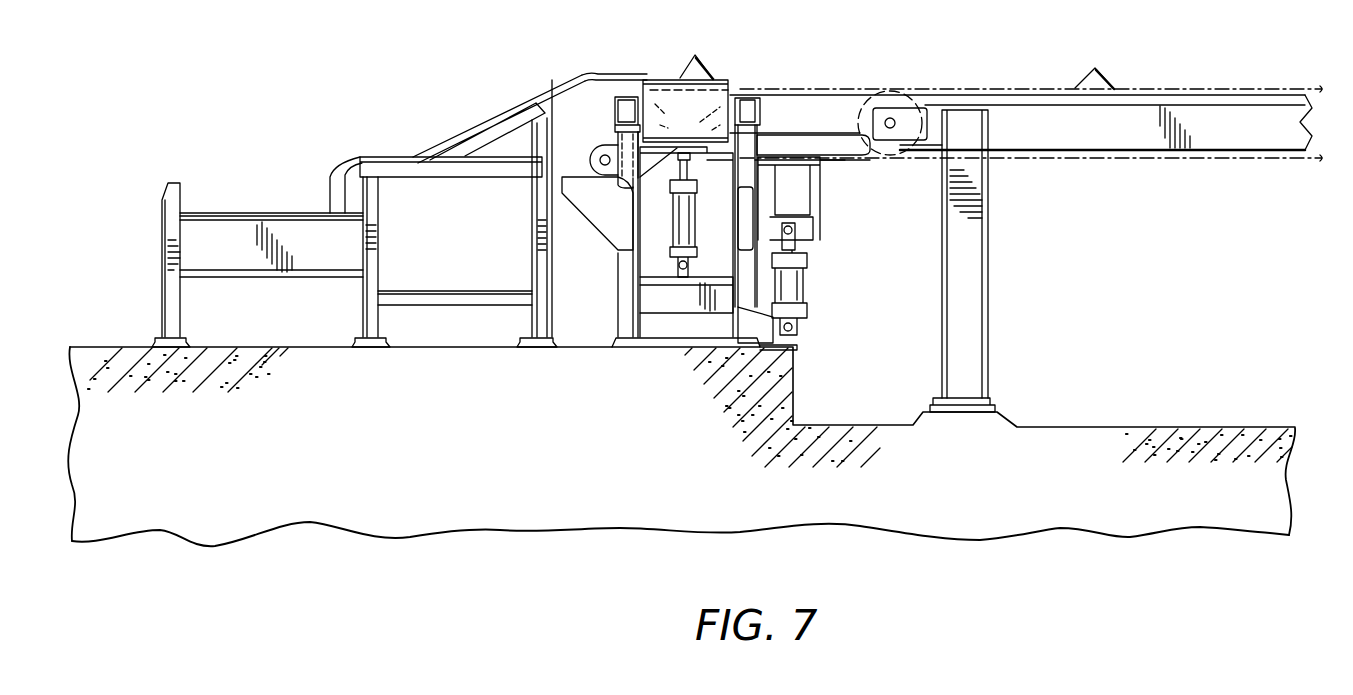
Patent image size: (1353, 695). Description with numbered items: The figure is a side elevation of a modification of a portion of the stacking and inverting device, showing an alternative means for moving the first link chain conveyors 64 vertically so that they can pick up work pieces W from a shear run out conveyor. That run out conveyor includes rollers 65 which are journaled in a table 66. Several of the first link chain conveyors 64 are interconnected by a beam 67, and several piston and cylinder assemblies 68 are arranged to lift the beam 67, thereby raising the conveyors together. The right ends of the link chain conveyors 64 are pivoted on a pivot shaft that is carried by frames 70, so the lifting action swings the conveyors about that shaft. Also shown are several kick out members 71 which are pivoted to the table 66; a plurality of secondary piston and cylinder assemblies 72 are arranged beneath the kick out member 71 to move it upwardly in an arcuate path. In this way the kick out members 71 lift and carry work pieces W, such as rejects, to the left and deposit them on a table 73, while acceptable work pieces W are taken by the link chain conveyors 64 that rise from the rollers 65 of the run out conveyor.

The first link chain conveyor 64 is at (843, 97).
The roller 65 is at (646, 92).
The table 66 is at (630, 220).
The beam 67 is at (803, 182).
The piston and cylinder assembly 68 is at (798, 290).
The frame 70 is at (980, 228).
The kick out member 71 is at (620, 155).
The secondary piston and cylinder assembly 72 is at (683, 222).
The table 73 is at (438, 138).
The work piece W is at (708, 73).